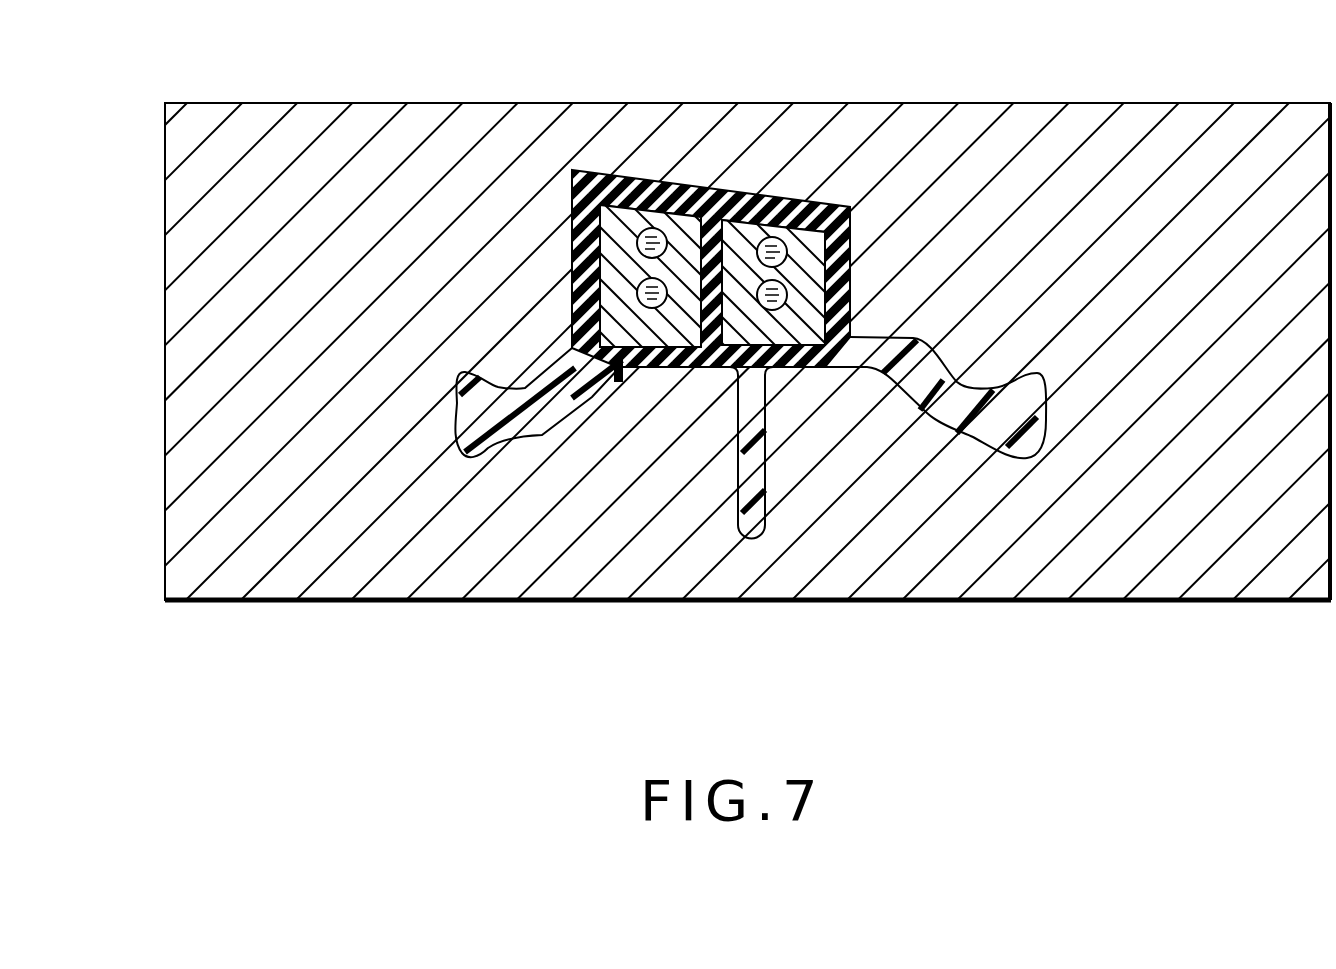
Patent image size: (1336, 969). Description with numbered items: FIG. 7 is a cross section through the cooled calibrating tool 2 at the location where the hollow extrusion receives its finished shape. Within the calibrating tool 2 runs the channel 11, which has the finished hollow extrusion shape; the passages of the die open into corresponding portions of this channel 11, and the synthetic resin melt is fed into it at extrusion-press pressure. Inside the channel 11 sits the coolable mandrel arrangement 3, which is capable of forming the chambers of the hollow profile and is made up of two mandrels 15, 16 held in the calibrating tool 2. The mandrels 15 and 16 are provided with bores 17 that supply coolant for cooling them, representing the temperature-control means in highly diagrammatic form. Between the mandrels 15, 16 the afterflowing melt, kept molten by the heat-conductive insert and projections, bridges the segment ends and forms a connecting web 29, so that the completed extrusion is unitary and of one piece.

The calibrating tool 2 is at (198, 221).
The web 29 is at (578, 262).
The mandrel 15 is at (598, 205).
The bores 17 is at (663, 282).
The mandrel 16 is at (800, 258).
The mandrel arrangement 3 is at (617, 372).
The channel 11 is at (700, 352).